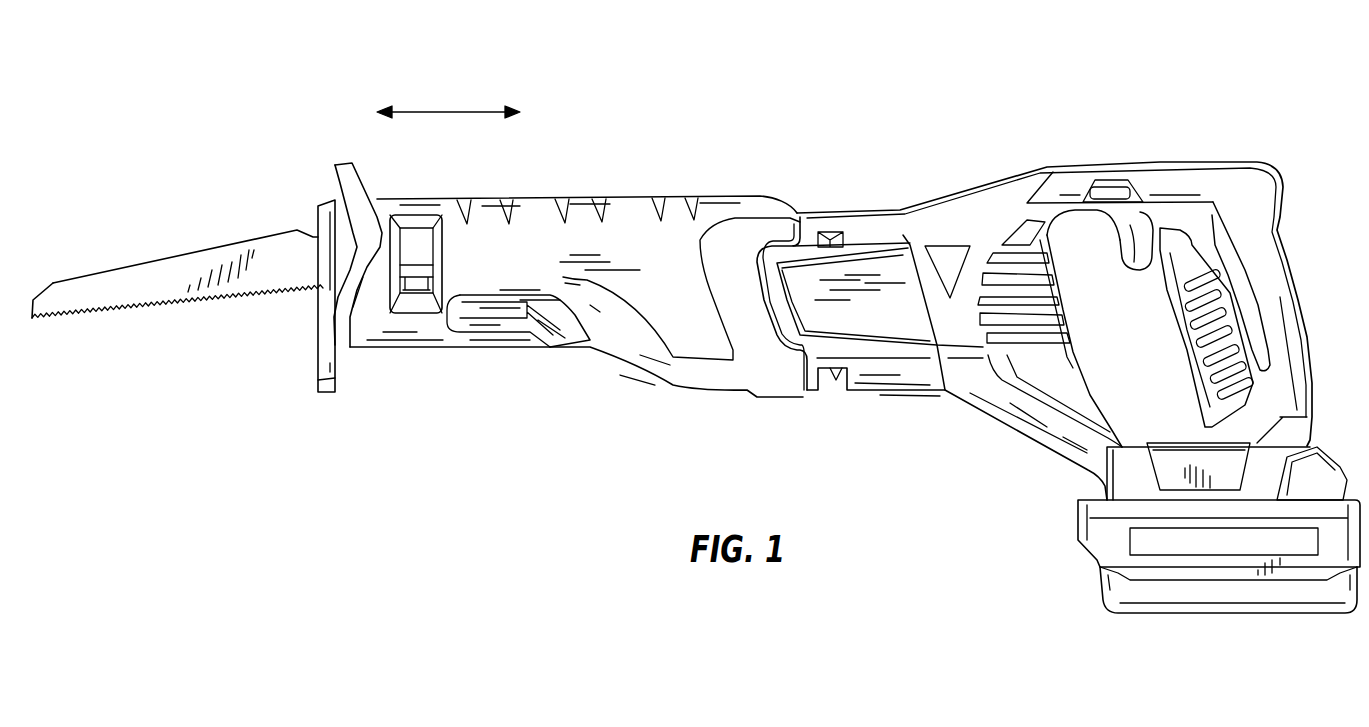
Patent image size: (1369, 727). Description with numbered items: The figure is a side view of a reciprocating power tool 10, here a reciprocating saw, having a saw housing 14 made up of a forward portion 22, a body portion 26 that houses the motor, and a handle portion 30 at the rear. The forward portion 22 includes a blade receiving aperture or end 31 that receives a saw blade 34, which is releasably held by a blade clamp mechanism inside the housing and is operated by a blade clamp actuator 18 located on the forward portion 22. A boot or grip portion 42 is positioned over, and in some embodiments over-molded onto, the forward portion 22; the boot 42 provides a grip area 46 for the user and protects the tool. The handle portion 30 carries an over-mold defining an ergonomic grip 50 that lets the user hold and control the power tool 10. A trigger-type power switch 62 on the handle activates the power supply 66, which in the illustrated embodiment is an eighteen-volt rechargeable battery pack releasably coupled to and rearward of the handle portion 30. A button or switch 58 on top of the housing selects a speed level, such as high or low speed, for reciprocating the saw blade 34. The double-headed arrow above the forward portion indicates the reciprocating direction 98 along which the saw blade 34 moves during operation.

The reciprocating power tool 10 is at (1026, 68).
The saw housing 14 is at (885, 390).
The blade clamp actuator 18 is at (412, 290).
The forward portion 22 is at (465, 200).
The body portion 26 is at (863, 210).
The handle portion 30 is at (1150, 160).
The blade receiving aperture or end 31 is at (320, 220).
The saw blade 34 is at (154, 273).
The boot or grip portion 42 is at (678, 388).
The grip area 46 is at (667, 282).
The ergonomic grip 50 is at (1203, 317).
The button or switch 58 is at (1115, 178).
The trigger-type power switch 62 is at (1110, 257).
The power supply 66 is at (1078, 540).
The reciprocating direction 98 is at (452, 112).